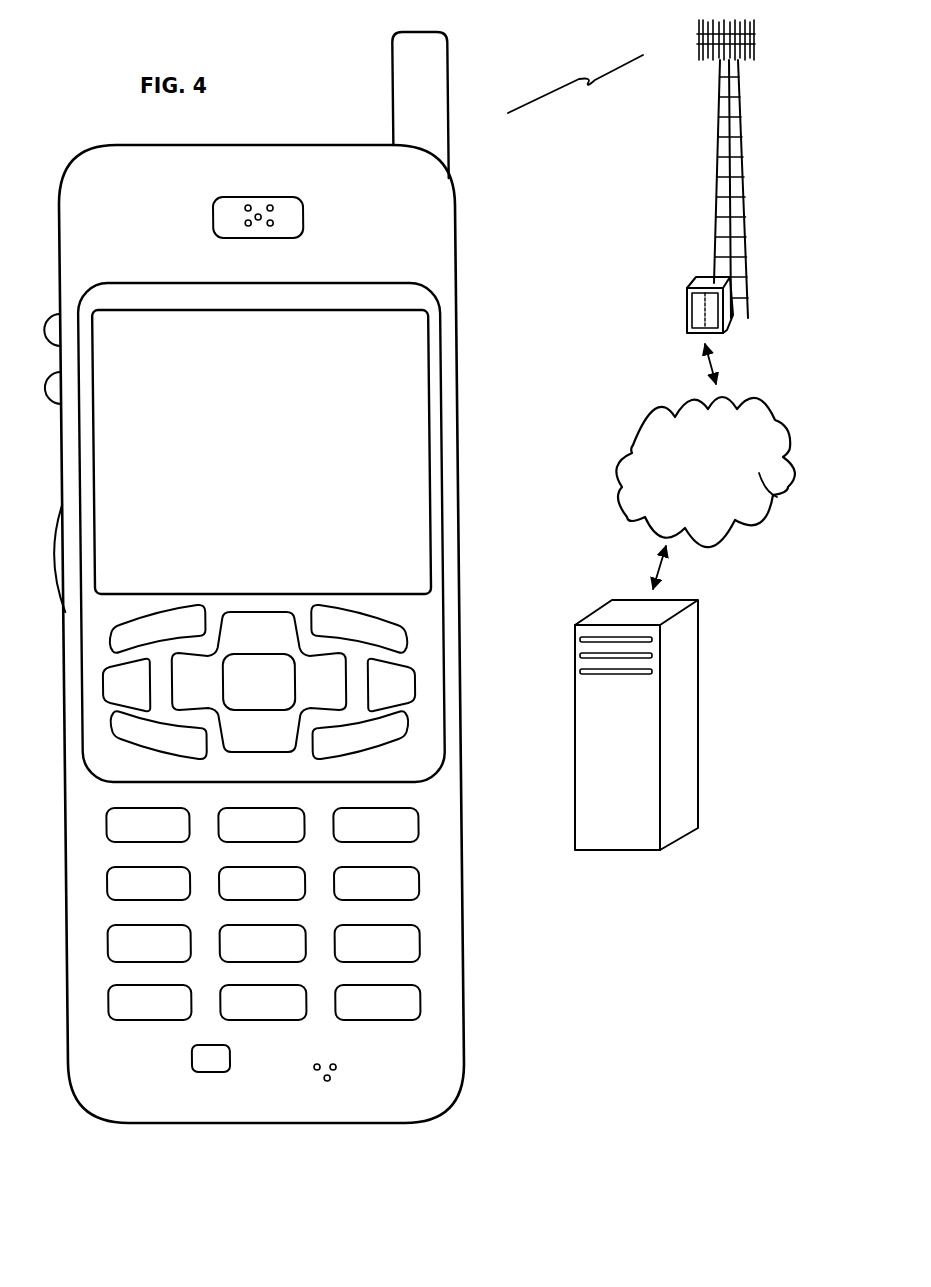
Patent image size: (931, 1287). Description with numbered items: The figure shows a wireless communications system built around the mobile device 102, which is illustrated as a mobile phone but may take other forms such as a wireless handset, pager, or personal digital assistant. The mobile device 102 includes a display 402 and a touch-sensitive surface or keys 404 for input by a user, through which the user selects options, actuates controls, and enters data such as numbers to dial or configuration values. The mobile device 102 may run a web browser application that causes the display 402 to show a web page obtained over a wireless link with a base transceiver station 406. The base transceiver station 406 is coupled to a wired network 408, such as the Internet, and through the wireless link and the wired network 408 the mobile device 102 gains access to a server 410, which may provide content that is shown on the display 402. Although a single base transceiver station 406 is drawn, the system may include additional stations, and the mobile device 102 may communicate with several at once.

The mobile device 102 is at (117, 1124).
The display 402 is at (440, 322).
The keys 404 is at (467, 1027).
The base transceiver station 406 is at (716, 190).
The wired network 408 is at (632, 517).
The server 410 is at (621, 851).